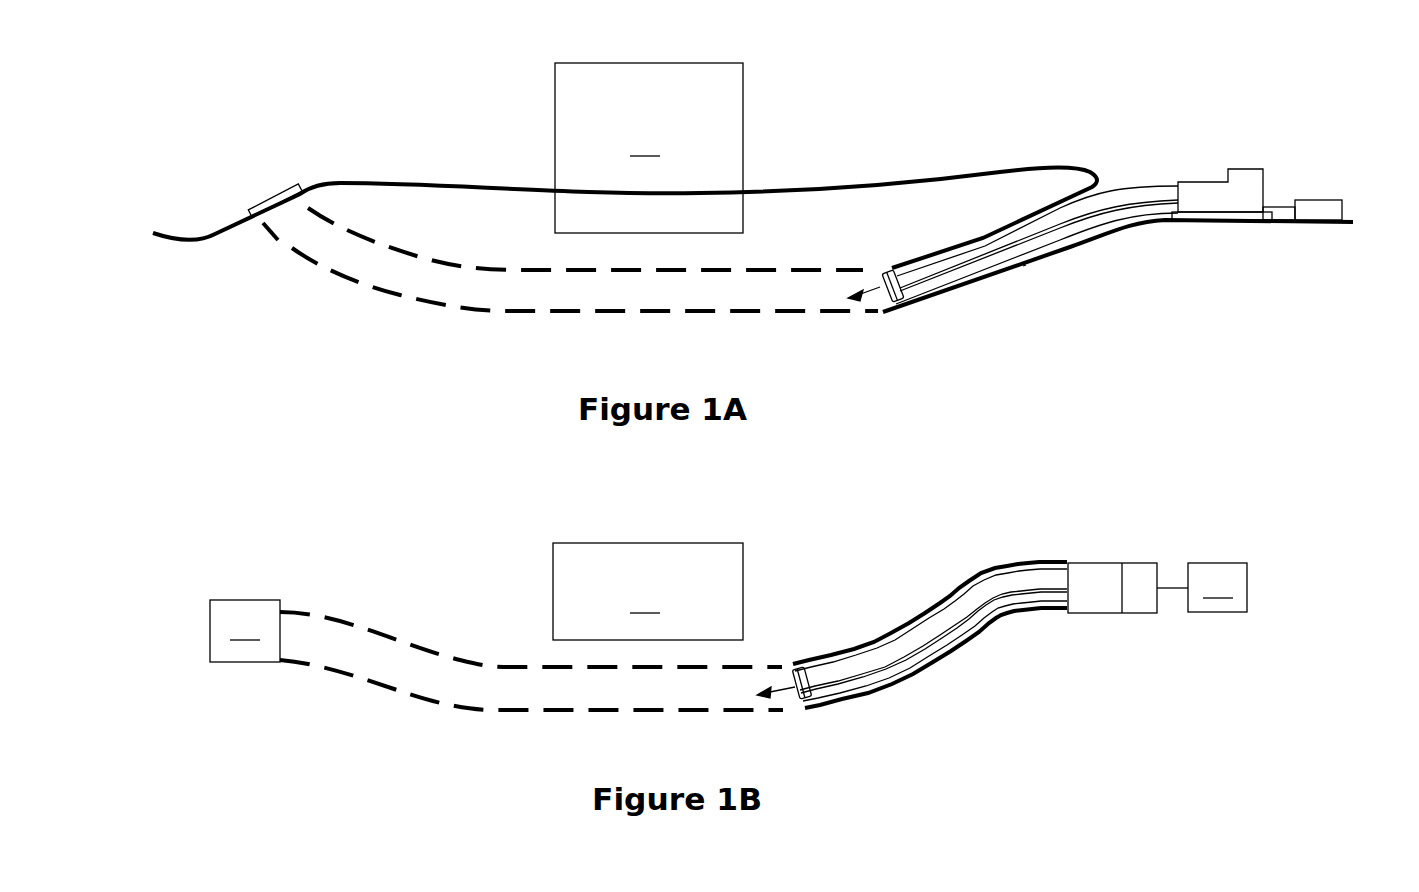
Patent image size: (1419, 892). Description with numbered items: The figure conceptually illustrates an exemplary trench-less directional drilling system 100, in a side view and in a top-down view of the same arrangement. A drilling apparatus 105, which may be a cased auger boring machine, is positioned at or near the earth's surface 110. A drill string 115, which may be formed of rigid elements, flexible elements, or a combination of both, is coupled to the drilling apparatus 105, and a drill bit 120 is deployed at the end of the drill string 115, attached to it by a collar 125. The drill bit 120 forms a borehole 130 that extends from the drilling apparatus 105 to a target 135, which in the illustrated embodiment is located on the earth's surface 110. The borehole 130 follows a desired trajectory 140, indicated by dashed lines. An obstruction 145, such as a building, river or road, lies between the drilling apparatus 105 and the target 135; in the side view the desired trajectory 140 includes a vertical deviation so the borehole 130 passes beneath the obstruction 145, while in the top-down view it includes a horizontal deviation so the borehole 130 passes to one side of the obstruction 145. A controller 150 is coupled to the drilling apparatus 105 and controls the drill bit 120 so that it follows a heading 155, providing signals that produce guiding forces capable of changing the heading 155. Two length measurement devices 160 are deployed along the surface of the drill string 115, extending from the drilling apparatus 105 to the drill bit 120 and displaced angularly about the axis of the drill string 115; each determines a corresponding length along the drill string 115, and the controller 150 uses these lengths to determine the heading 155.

In FIG. 1A, the trench-less drilling system 100 is at (1197, 75).
In FIG. 1B, the trench-less drilling system 100 is at (1135, 718).
In FIG. 1A, the drilling apparatus 105 is at (1243, 168).
In FIG. 1B, the drilling apparatus 105 is at (1103, 563).
In FIG. 1A, the earth's surface 110 is at (905, 185).
In FIG. 1A, the drill string 115 is at (1023, 266).
In FIG. 1B, the drill string 115 is at (923, 660).
In FIG. 1A, the drill bit 120 is at (878, 287).
In FIG. 1B, the drill bit 120 is at (788, 668).
In FIG. 1A, the collar 125 is at (898, 272).
In FIG. 1B, the collar 125 is at (807, 660).
In FIG. 1A, the borehole 130 is at (1085, 249).
In FIG. 1B, the borehole 130 is at (868, 690).
In FIG. 1A, the target 135 is at (275, 192).
In FIG. 1B, the target 135 is at (245, 631).
In FIG. 1A, the desired trajectory 140 is at (447, 305).
In FIG. 1B, the desired trajectory 140 is at (427, 702).
In FIG. 1A, the obstruction 145 is at (649, 148).
In FIG. 1B, the obstruction 145 is at (648, 591).
In FIG. 1A, the controller 150 is at (1325, 200).
In FIG. 1B, the controller 150 is at (1217, 587).
In FIG. 1A, the heading 155 is at (875, 269).
In FIG. 1B, the heading 155 is at (785, 706).
In FIG. 1A, the length measurement devices 160 is at (973, 268).
In FIG. 1B, the length measurement devices 160 is at (943, 632).